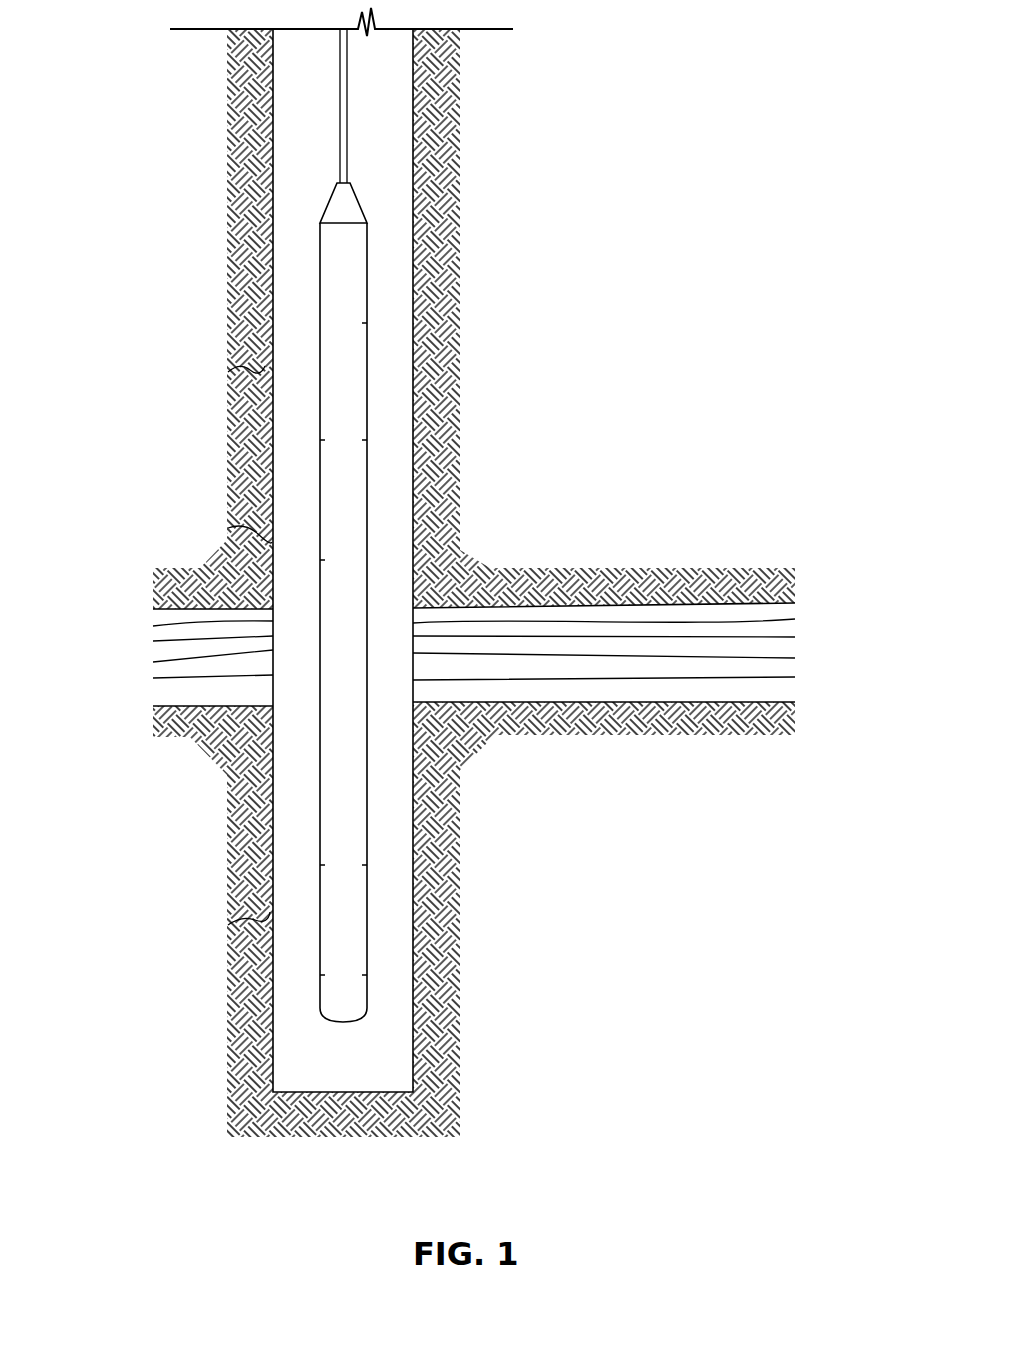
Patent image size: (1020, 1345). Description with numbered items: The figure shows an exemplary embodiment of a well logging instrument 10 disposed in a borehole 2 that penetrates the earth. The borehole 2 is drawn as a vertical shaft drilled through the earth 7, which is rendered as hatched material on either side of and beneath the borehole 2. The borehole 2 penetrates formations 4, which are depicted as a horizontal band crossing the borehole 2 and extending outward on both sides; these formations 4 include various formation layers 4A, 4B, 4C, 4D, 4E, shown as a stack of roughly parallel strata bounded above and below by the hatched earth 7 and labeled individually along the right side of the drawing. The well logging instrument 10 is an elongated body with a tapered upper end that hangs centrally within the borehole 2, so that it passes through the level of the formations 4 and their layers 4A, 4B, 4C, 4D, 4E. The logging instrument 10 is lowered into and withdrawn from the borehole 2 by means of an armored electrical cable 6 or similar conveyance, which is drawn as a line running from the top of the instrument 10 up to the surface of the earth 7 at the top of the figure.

The borehole 2 is at (393, 102).
The formations 4 is at (473, 659).
The formation layer 4A is at (790, 612).
The formation layer 4B is at (792, 628).
The formation layer 4C is at (790, 646).
The formation layer 4D is at (790, 666).
The formation layer 4E is at (792, 688).
The armored electrical cable 6 is at (340, 108).
The earth 7 is at (445, 928).
The well logging instrument 10 is at (385, 296).